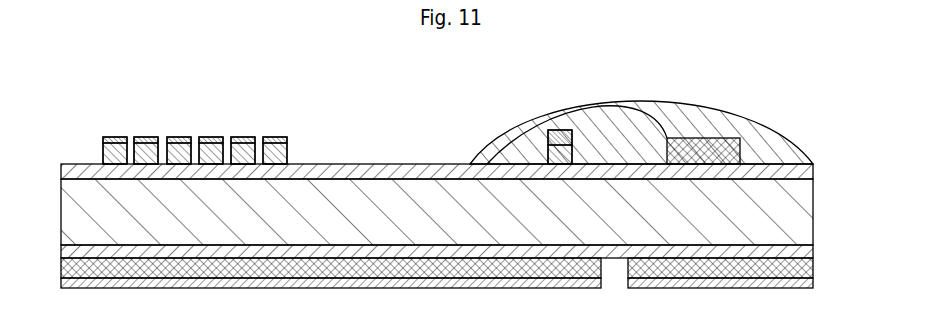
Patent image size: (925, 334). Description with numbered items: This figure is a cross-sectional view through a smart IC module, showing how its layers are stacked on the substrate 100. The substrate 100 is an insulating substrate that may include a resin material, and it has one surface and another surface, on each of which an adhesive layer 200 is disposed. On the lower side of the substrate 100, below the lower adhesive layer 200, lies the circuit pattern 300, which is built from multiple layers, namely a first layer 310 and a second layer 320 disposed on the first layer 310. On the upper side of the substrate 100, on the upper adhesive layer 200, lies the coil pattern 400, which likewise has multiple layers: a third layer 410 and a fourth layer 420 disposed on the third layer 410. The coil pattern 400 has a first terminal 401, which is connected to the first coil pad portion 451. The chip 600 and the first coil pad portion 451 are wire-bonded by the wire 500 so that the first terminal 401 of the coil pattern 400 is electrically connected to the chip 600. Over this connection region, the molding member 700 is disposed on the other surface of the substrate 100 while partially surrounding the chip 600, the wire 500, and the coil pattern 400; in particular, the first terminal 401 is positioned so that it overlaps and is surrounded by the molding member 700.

The substrate 100 is at (815, 212).
The adhesive layer 200 is at (815, 171).
The circuit pattern 300 is at (486, 286).
The first layer 310 is at (815, 269).
The second layer 320 is at (815, 286).
The coil pattern 400 is at (40, 103).
The first terminal 401 is at (489, 107).
The third layer 410 is at (103, 158).
The fourth layer 420 is at (103, 140).
The first coil pad portion 451 is at (557, 130).
The wire 500 is at (600, 108).
The chip 600 is at (740, 152).
The molding member 700 is at (705, 117).